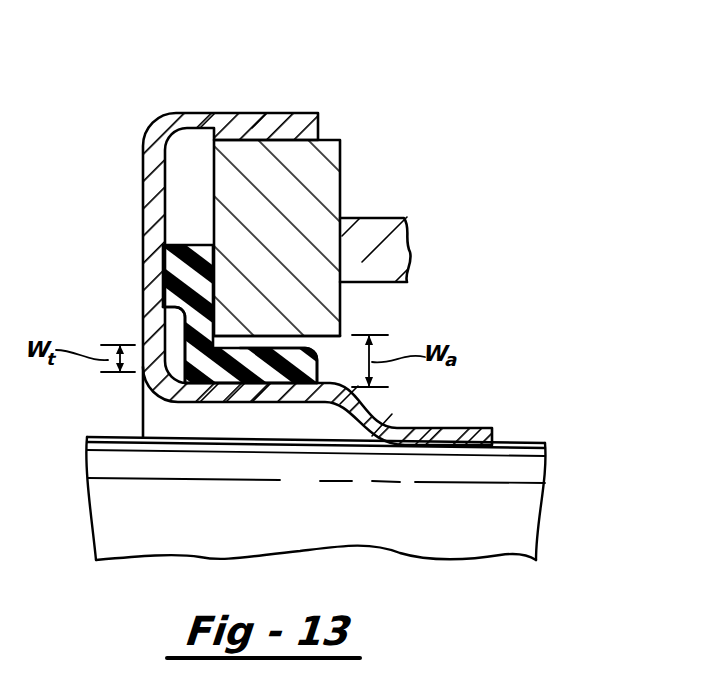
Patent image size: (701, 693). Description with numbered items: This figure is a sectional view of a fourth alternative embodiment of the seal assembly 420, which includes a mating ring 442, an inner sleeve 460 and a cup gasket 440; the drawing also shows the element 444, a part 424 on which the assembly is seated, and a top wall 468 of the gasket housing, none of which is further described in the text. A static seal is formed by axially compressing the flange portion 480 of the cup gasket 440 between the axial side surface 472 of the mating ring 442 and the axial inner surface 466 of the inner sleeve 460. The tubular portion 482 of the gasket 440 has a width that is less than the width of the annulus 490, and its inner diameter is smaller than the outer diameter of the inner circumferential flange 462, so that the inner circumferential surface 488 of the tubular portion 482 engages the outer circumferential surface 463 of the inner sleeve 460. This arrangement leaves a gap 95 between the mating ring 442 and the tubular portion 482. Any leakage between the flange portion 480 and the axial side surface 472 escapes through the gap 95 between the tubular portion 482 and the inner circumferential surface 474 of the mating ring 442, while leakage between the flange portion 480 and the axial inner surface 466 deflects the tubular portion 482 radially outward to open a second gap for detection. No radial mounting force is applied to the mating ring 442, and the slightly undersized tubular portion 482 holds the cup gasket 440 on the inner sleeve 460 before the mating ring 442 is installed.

The gap 95 is at (293, 331).
The seal assembly 420 is at (556, 433).
The rail base 424 is at (508, 537).
The cup gasket 440 is at (203, 243).
The mating ring 442 is at (322, 158).
The arm 444 is at (375, 225).
The inner sleeve 460 is at (495, 425).
The inner circumferential flange 462 is at (217, 393).
The outer circumferential surface 463 is at (247, 385).
The axial inner surface 466 is at (149, 138).
The top wall 468 is at (202, 114).
The axial side surface 472 is at (208, 147).
The inner circumferential surface 474 is at (341, 372).
The flange portion 480 is at (174, 258).
The tubular portion 482 is at (178, 392).
The inner circumferential surface 488 is at (282, 378).
The annulus 490 is at (330, 340).